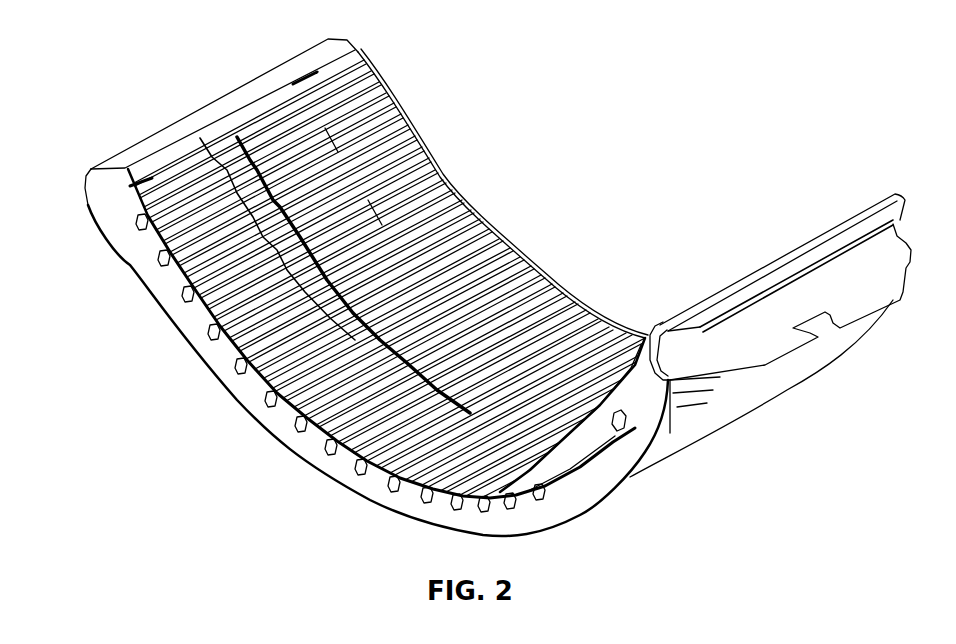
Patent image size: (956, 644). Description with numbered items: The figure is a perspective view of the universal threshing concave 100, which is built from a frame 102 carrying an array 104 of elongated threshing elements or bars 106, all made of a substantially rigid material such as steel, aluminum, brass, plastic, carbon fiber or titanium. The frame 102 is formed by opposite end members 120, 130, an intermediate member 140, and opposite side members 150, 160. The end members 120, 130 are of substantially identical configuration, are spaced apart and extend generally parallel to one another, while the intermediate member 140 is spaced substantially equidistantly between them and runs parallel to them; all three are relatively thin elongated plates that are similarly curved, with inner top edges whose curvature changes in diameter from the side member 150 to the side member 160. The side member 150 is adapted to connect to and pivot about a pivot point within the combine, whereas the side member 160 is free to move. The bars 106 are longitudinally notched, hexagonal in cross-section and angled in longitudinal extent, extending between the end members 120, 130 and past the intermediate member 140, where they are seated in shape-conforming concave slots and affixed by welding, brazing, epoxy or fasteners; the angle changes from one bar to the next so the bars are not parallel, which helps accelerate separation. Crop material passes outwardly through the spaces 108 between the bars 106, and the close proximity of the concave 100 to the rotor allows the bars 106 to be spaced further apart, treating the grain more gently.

The threshing concave 100 is at (647, 124).
The frame 102 is at (148, 245).
The array of elongated threshing elements 104 is at (493, 312).
The threshing bar 106 is at (593, 367).
The spaces between the bars 108 is at (376, 208).
The end member 120 is at (363, 480).
The end member 130 is at (380, 303).
The intermediate member 140 is at (410, 316).
The side member 150 is at (874, 222).
The side member 160 is at (210, 113).